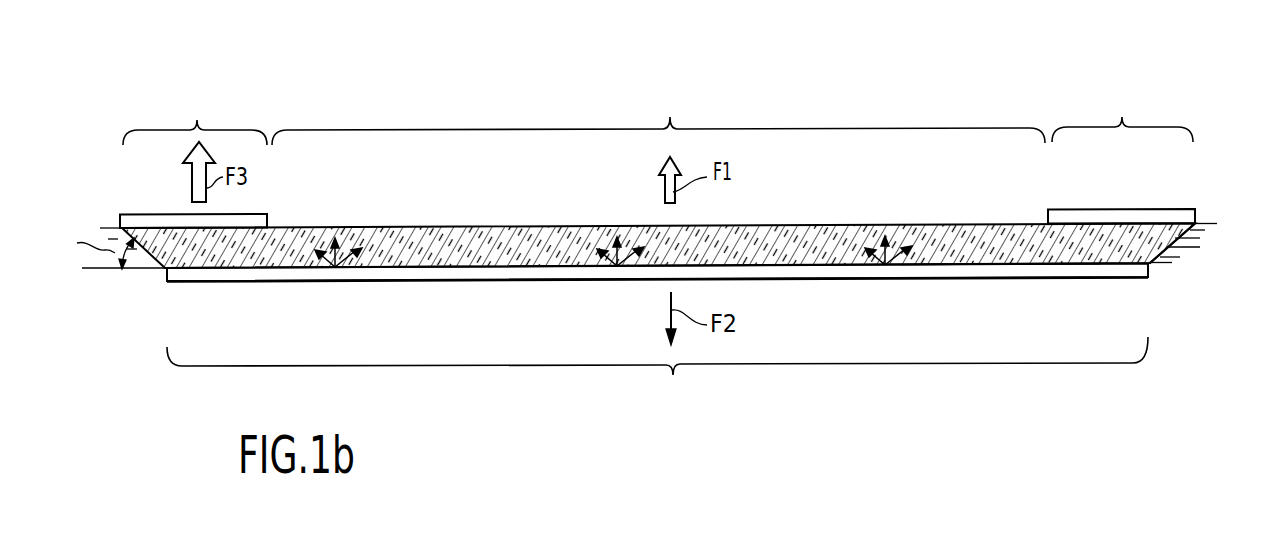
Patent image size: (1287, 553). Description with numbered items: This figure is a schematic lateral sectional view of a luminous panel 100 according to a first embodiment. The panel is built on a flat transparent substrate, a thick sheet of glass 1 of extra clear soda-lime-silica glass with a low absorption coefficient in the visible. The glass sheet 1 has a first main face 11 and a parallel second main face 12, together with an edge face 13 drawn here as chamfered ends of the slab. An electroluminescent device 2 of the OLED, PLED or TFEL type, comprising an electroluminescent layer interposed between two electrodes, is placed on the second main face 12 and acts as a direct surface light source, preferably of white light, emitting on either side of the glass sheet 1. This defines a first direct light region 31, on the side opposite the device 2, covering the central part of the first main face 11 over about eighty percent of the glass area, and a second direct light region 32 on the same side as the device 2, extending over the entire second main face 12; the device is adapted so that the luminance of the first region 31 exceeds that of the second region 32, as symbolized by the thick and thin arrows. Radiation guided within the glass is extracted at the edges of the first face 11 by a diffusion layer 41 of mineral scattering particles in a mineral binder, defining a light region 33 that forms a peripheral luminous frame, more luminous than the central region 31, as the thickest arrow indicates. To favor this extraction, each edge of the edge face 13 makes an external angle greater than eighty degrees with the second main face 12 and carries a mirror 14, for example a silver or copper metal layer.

The luminous panel 100 is at (124, 114).
The sheet of glass 1 is at (443, 247).
The electroluminescent device 2 is at (392, 275).
The diffusion layer 41 is at (1107, 217).
The first main face 11 is at (1176, 245).
The second main face 12 is at (1000, 266).
The edge face 13 is at (1168, 263).
The mirror 14 is at (1207, 223).
The first direct light region 31 is at (658, 112).
The second direct light region 32 is at (657, 375).
The light region forming a peripheral luminous frame 33 is at (658, 112).